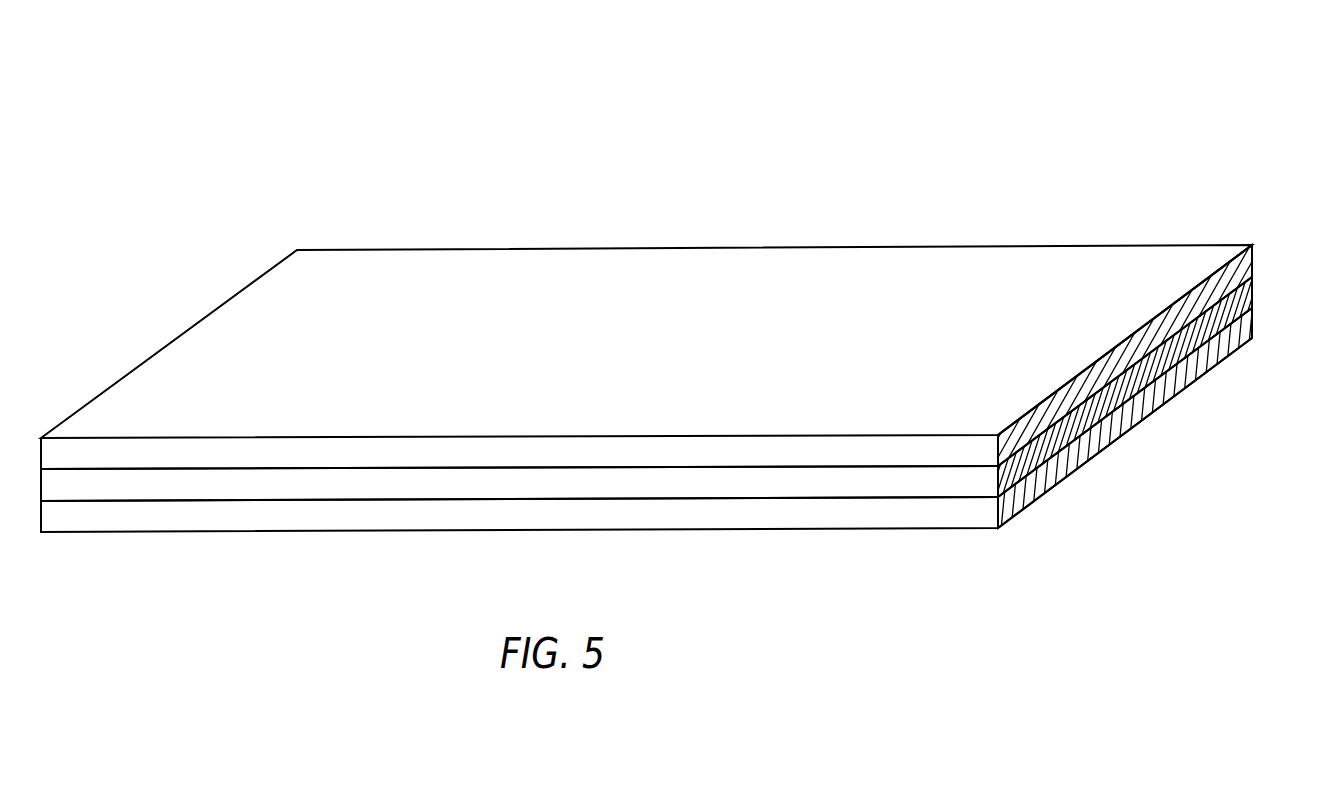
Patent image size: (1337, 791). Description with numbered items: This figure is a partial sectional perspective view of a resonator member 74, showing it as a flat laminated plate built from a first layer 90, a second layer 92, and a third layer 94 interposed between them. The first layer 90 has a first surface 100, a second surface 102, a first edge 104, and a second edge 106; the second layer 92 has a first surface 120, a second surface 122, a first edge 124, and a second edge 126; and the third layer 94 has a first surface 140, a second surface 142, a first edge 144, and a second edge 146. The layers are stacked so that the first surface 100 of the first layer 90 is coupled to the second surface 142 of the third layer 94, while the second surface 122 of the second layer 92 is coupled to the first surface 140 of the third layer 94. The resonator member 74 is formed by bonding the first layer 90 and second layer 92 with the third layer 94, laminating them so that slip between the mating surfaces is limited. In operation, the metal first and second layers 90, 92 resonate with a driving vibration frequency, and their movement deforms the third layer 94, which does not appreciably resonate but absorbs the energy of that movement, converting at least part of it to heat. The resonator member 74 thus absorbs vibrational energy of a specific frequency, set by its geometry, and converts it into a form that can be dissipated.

The resonator member 74 is at (665, 128).
The first layer 90 is at (455, 453).
The second layer 92 is at (677, 512).
The third layer 94 is at (888, 482).
The first surface 100 is at (1132, 370).
The second surface 102 is at (1125, 333).
The first edge 104 is at (965, 452).
The second edge 106 is at (1257, 260).
The first surface 120 is at (1208, 373).
The second surface 122 is at (1028, 466).
The first edge 124 is at (987, 515).
The second edge 126 is at (1242, 332).
The first surface 140 is at (755, 502).
The second surface 142 is at (713, 465).
The first edge 144 is at (970, 482).
The second edge 146 is at (1245, 298).